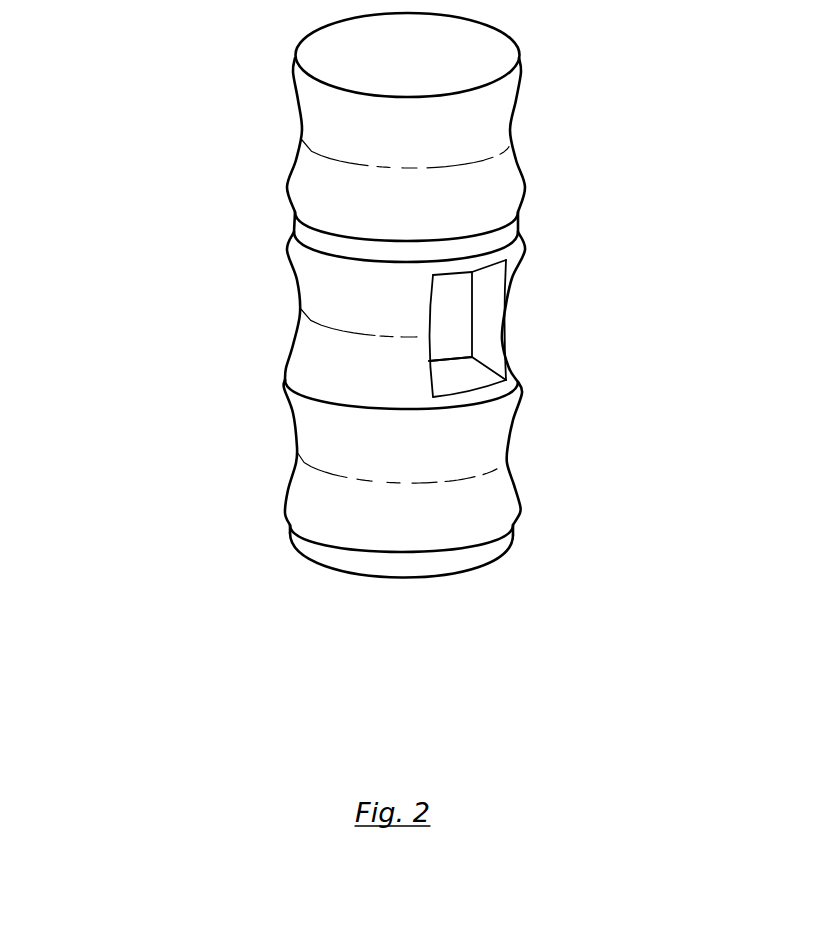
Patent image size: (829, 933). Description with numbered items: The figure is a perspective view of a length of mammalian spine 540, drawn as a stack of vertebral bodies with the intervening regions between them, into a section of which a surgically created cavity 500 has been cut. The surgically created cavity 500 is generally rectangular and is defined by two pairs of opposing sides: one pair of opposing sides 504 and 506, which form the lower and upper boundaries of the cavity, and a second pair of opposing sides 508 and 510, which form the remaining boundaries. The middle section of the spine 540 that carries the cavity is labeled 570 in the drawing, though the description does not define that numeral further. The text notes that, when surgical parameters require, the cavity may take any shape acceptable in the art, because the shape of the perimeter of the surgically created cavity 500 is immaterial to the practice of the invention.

The mammalian spine 540 is at (278, 288).
The intermediate body segment 570 is at (375, 357).
The surgically created cavity 500 is at (438, 377).
The side of surgically created cavity 506 is at (462, 268).
The side of surgically created cavity 504 is at (462, 400).
The side of surgically created cavity 508 is at (427, 352).
The side of surgically created cavity 510 is at (487, 323).